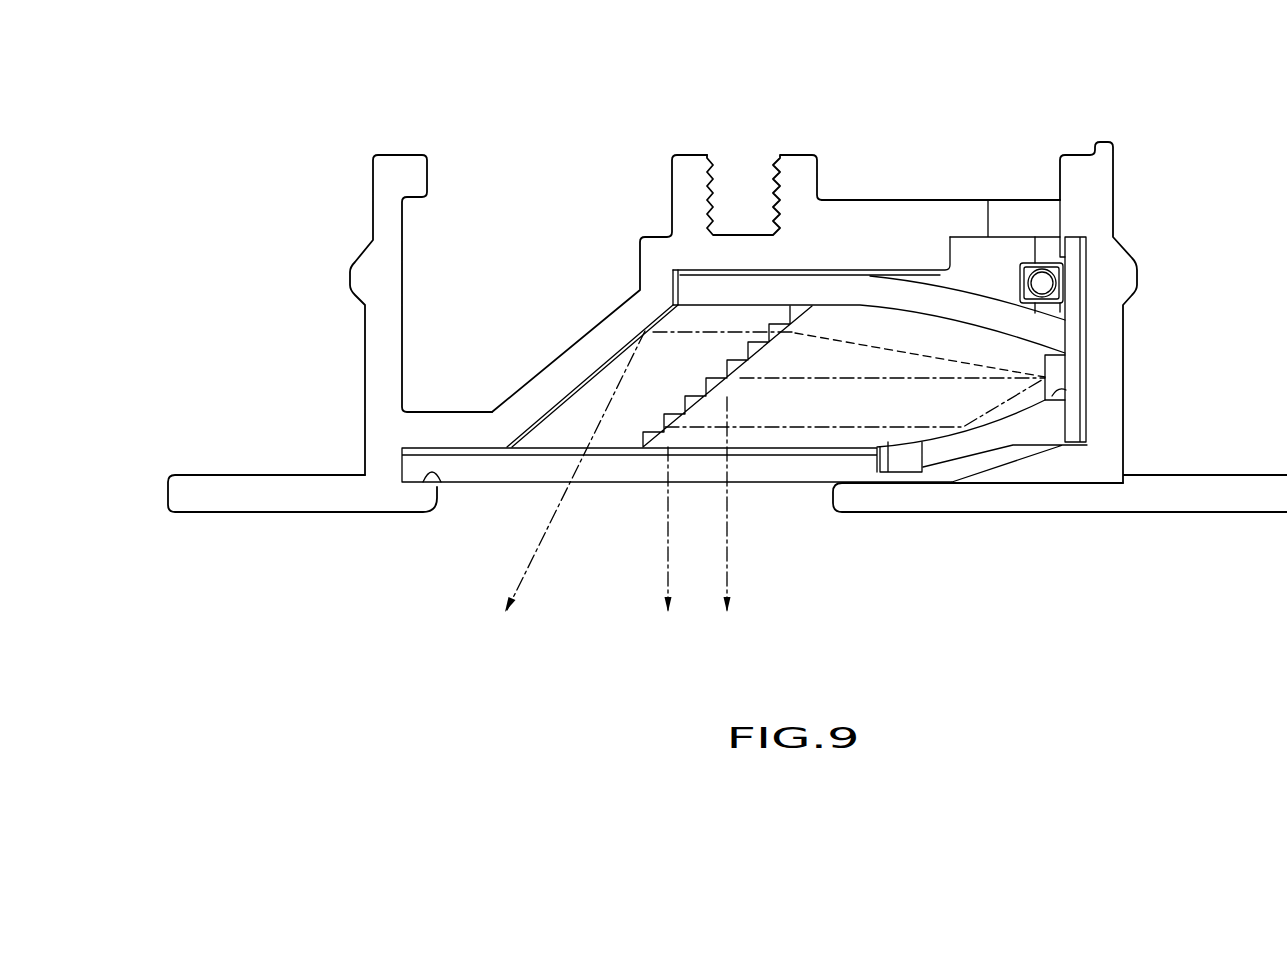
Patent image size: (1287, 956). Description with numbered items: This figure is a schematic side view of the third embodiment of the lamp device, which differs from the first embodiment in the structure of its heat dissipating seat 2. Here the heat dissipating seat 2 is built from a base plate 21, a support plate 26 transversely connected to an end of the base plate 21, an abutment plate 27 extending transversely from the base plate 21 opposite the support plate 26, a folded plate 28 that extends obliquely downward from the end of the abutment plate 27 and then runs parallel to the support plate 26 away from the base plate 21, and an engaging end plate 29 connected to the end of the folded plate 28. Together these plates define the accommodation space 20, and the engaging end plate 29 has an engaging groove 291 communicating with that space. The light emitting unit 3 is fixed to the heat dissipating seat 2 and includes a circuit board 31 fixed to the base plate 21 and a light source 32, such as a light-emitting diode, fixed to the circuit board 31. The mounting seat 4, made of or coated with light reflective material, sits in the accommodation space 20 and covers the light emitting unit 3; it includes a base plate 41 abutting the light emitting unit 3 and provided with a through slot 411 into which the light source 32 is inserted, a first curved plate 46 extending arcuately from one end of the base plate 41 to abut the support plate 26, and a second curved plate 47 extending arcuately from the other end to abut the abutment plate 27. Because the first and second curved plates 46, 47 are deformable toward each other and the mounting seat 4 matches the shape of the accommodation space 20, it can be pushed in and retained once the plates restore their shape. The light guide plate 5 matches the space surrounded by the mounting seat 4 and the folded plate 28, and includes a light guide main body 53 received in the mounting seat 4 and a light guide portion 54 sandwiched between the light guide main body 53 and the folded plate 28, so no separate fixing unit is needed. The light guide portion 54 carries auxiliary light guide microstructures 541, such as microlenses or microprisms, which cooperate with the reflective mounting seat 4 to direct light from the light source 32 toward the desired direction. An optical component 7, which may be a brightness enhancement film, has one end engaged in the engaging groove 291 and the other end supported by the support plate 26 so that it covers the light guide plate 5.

The heat dissipating seat 2 is at (350, 560).
The accommodation space 20 is at (977, 253).
The base plate 21 is at (1123, 327).
The support plate 26 is at (1195, 505).
The abutment plate 27 is at (750, 245).
The folded plate 28 is at (524, 386).
The engaging end plate 29 is at (368, 380).
The engaging groove 291 is at (440, 473).
The light emitting unit 3 is at (1040, 222).
The circuit board 31 is at (1078, 267).
The light source 32 is at (1060, 380).
The mounting seat 4 is at (940, 485).
The base plate 41 is at (1057, 365).
The through slot 411 is at (1068, 392).
The first curved plate 46 is at (998, 447).
The second curved plate 47 is at (903, 293).
The light guide plate 5 is at (798, 470).
The light guide main body 53 is at (880, 320).
The light guide portion 54 is at (590, 388).
The auxiliary light guide microstructure 541 is at (685, 398).
The optical component 7 is at (627, 477).